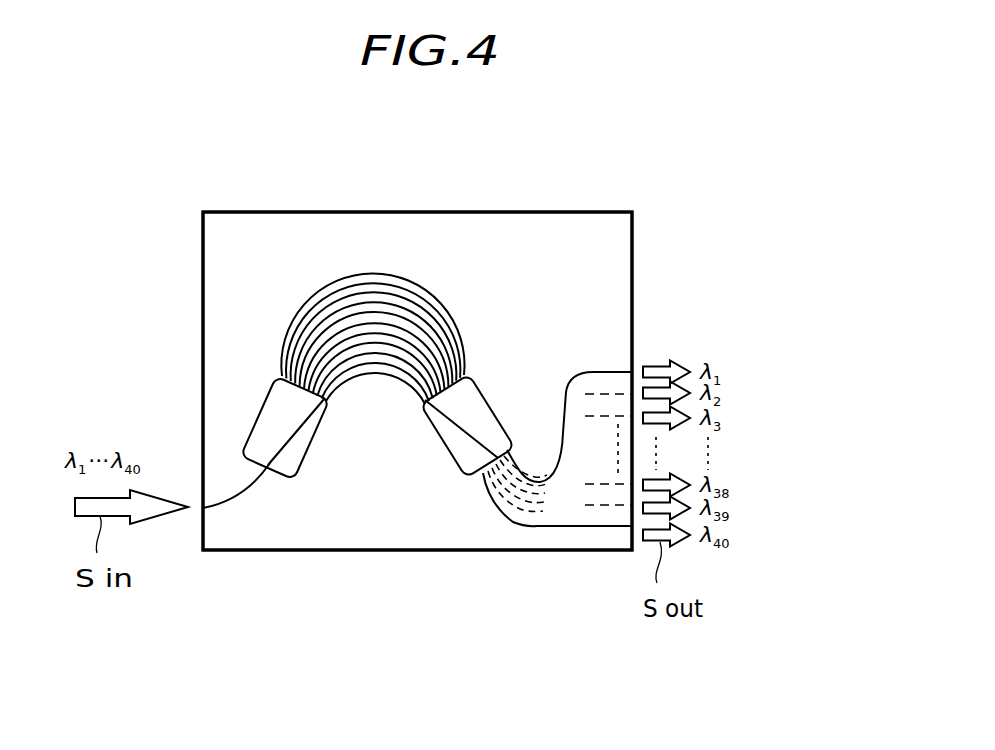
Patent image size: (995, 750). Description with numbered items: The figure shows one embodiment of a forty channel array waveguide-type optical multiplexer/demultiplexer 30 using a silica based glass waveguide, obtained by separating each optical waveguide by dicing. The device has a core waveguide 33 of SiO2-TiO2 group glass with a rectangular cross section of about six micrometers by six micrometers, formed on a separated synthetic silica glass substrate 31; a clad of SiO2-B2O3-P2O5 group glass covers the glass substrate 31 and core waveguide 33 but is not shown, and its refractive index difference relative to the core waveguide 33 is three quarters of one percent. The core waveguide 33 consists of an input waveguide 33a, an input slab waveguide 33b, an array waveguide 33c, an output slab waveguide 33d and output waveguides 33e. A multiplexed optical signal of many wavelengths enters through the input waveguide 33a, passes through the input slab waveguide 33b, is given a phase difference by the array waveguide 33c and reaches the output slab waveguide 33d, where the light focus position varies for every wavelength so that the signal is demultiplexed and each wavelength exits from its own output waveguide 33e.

The optical multiplexer/demultiplexer 30 is at (622, 192).
The glass substrate 31 is at (229, 263).
The core waveguide 33 is at (347, 272).
The input waveguide 33a is at (237, 514).
The input slab waveguide 33b is at (256, 414).
The array waveguide 33c is at (430, 280).
The output slab waveguide 33d is at (490, 393).
The output waveguide 33e is at (577, 527).